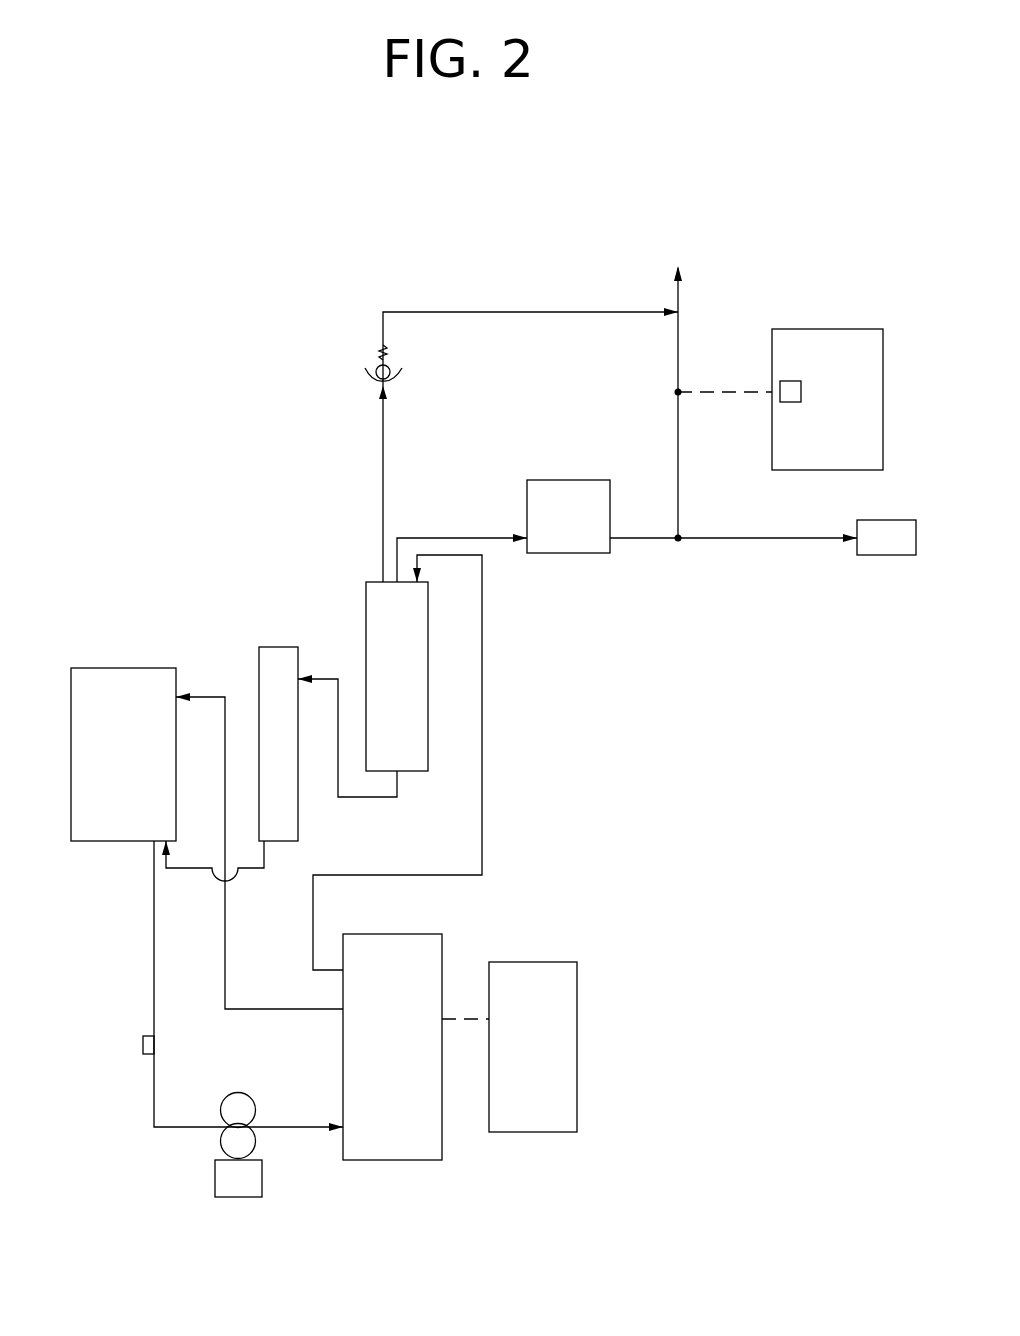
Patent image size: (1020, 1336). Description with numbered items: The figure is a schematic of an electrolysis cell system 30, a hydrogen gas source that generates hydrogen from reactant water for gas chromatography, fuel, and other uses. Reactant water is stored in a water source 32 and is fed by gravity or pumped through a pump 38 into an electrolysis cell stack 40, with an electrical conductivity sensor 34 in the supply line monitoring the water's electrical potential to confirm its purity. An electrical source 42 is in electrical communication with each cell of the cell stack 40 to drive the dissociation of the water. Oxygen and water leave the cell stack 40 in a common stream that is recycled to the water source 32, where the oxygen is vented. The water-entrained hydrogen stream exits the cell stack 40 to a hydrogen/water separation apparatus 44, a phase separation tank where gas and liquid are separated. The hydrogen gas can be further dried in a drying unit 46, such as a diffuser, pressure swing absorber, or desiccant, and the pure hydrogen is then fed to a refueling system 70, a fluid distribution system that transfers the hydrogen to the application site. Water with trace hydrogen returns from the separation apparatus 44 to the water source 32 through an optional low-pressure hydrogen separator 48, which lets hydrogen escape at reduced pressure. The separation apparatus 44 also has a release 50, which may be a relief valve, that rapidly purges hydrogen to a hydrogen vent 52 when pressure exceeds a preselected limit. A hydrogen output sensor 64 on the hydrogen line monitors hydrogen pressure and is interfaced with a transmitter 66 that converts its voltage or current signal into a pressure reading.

The electrolysis cell system 30 is at (188, 218).
The water source 32 is at (71, 690).
The electrical conductivity sensor 34 is at (143, 1044).
The pump 38 is at (220, 1143).
The electrolysis cell stack 40 is at (396, 1160).
The electrical source 42 is at (577, 1041).
The hydrogen/water separation apparatus 44 is at (450, 672).
The drying unit 46 is at (568, 553).
The low-pressure hydrogen separator 48 is at (278, 647).
The release 50 is at (367, 380).
The hydrogen vent 52 is at (672, 270).
The hydrogen output sensor 64 is at (790, 402).
The transmitter 66 is at (833, 329).
The refueling system 70 is at (872, 521).